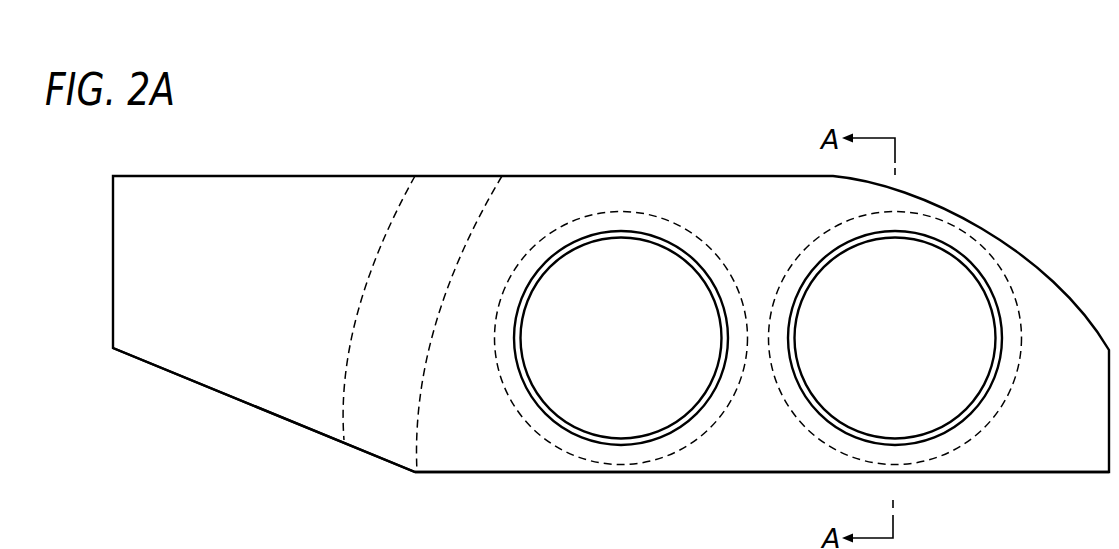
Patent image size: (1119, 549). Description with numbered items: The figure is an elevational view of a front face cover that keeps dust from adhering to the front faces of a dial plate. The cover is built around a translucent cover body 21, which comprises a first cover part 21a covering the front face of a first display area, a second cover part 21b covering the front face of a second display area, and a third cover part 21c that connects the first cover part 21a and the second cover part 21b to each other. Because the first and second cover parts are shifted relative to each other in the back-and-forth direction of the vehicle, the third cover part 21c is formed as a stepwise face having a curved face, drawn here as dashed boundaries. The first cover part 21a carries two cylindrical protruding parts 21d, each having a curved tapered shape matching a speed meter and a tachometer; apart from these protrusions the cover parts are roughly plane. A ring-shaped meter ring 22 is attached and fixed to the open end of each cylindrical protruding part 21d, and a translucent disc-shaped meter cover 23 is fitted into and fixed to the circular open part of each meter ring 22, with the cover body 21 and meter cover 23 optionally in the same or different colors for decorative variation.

The cover body 21 is at (1066, 288).
The first cover part 21a is at (507, 447).
The second cover part 21b is at (220, 373).
The third cover part 21c is at (377, 442).
The cylindrical protruding part 21d is at (613, 453).
The meter ring 22 is at (623, 238).
The meter cover 23 is at (638, 410).